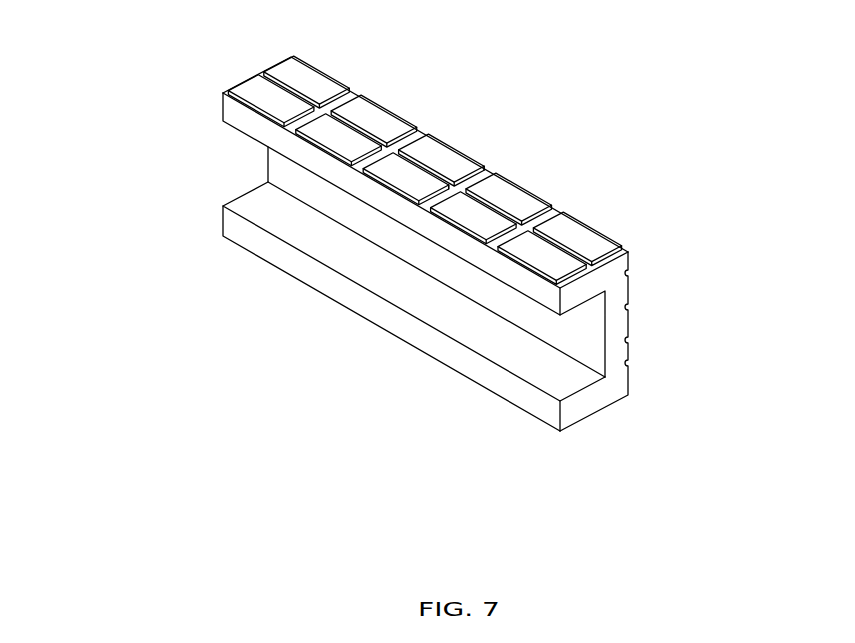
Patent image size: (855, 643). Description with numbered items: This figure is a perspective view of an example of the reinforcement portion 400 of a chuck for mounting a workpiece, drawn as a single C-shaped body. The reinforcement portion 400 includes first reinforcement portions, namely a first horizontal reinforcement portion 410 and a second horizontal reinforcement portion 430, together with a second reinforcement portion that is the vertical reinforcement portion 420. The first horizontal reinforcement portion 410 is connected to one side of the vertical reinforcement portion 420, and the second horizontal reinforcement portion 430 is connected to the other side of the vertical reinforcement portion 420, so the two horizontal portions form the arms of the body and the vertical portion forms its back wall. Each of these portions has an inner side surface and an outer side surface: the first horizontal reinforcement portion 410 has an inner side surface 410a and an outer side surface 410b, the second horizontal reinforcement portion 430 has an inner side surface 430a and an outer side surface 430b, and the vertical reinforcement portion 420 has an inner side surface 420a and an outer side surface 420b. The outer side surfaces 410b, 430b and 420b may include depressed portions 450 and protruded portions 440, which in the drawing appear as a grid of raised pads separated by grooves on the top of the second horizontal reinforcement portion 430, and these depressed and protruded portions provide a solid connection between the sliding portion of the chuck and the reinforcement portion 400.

The reinforcement portion 400 is at (425, 256).
The first horizontal reinforcement portion 410 is at (414, 330).
The inner side surface of the first horizontal reinforcement portion 410a is at (563, 374).
The outer side surface of the first horizontal reinforcement portion 410b is at (585, 436).
The vertical reinforcement portion 420 is at (540, 289).
The inner side surface of the vertical reinforcement portion 420a is at (592, 334).
The outer side surface of the vertical reinforcement portion 420b is at (640, 313).
The second horizontal reinforcement portion 430 is at (332, 206).
The inner side surface of the second horizontal reinforcement portion 430a is at (248, 146).
The outer side surface of the second horizontal reinforcement portion 430b is at (365, 160).
The protruded portions 440 is at (410, 128).
The depressed portions 450 is at (479, 170).